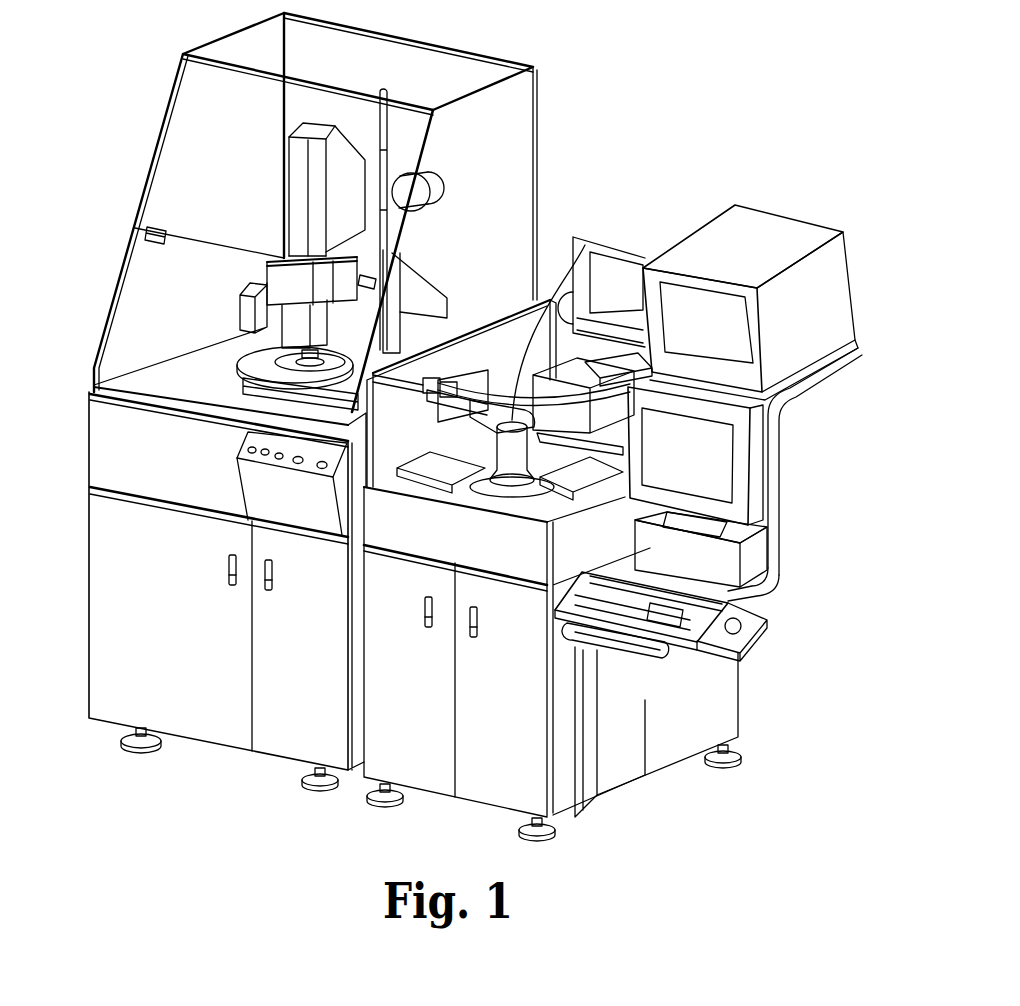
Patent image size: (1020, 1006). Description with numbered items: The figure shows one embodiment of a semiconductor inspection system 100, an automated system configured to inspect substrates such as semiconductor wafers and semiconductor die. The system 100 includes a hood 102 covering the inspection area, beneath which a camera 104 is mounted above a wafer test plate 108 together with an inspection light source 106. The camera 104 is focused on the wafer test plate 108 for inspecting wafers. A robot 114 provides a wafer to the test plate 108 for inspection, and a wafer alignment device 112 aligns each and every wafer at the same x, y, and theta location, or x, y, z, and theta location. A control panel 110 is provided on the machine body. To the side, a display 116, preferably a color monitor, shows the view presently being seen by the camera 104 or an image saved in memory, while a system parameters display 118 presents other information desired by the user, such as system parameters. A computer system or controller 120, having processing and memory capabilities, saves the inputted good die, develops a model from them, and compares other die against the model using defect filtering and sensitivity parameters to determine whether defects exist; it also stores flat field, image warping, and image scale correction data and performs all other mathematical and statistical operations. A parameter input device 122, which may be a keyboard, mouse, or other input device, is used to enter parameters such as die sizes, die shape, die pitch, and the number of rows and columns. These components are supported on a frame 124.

The semiconductor inspection system 100 is at (590, 70).
The hood 102 is at (515, 177).
The camera 104 is at (298, 179).
The inspection light source 106 is at (290, 331).
The wafer test plate 108 is at (256, 361).
The control panel 110 is at (262, 497).
The wafer alignment device 112 is at (135, 392).
The robot 114 is at (567, 287).
The display 116 is at (835, 282).
The system parameters display 118 is at (758, 471).
The computer system or controller 120 is at (758, 560).
The parameter input device 122 is at (722, 598).
The frame 124 is at (637, 763).